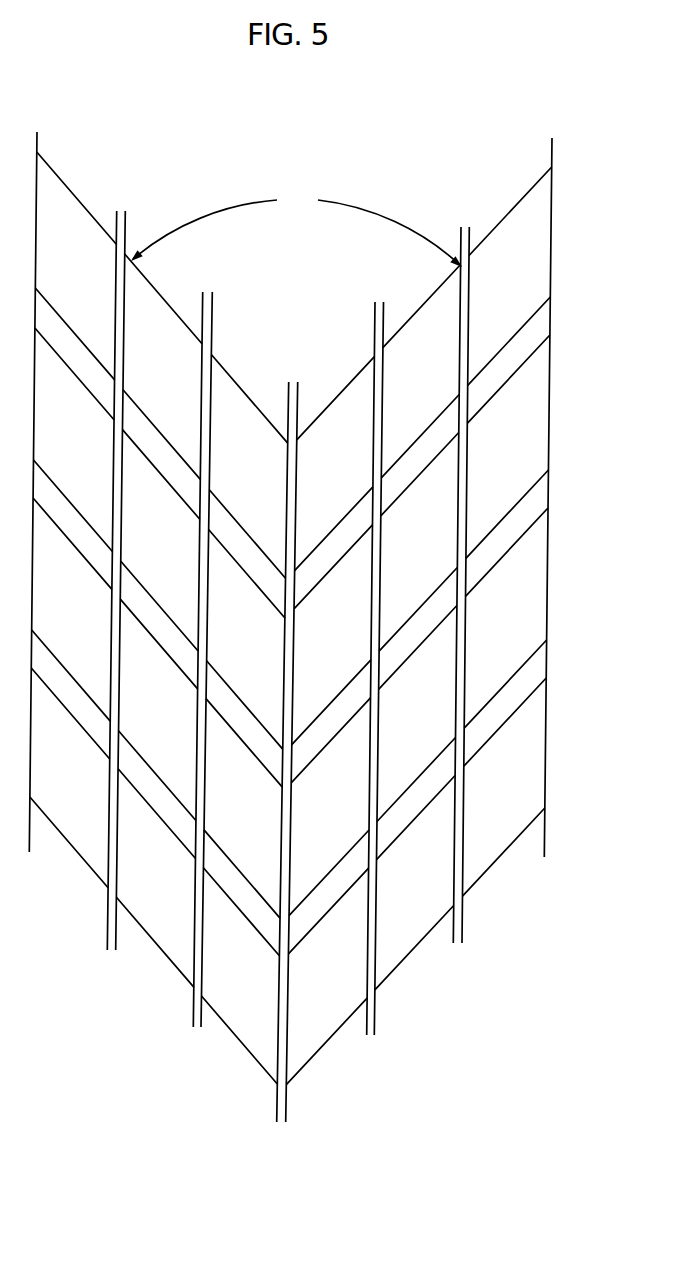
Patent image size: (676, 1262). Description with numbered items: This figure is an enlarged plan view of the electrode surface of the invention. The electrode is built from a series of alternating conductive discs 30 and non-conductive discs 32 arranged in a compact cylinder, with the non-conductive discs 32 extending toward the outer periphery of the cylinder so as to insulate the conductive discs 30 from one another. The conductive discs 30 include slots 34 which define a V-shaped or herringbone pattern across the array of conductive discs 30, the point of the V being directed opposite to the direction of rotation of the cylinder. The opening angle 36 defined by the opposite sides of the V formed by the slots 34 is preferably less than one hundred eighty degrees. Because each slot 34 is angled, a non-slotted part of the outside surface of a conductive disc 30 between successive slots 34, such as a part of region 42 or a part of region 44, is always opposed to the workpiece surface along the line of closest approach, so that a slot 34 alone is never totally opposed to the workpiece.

The conductive disc 30 is at (533, 770).
The non-conductive disc 32 is at (461, 818).
The slot 34 is at (518, 688).
The opening angle 36 is at (343, 203).
The region 42 is at (536, 565).
The region 44 is at (533, 400).